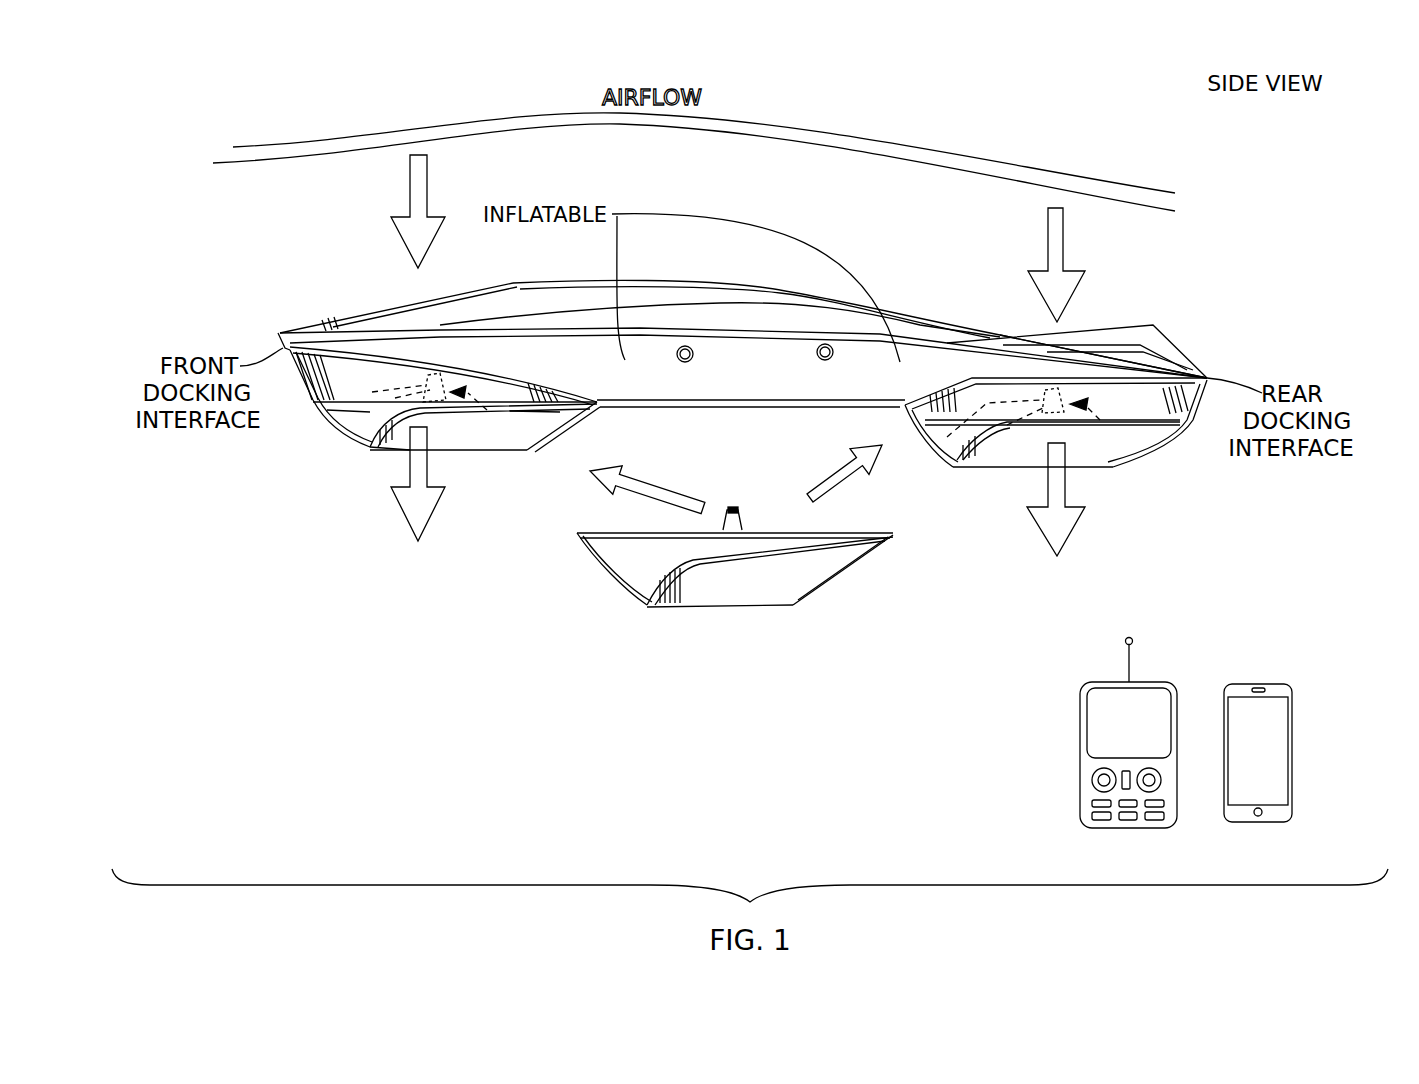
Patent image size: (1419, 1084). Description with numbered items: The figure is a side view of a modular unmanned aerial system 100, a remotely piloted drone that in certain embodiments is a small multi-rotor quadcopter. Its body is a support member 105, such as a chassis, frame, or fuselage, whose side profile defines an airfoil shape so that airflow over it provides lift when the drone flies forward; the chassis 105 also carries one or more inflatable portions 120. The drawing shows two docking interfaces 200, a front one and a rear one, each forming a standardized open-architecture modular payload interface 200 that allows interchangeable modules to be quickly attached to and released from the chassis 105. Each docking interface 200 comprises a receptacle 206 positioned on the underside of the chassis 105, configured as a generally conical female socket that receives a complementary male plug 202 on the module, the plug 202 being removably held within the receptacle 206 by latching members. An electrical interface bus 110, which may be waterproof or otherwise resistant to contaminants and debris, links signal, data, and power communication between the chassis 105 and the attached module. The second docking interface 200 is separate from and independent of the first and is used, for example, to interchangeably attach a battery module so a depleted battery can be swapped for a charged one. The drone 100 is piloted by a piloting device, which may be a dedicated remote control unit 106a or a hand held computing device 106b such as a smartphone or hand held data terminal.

The modular unmanned aerial system 100 is at (313, 103).
The support member 105 is at (382, 310).
The electrical interface bus 110 is at (436, 380).
The inflatable portion 120 is at (928, 360).
The modular payload interface 200 is at (487, 410).
The plug 202 is at (395, 398).
The receptacle 206 is at (372, 392).
The dedicated remote control unit 106a is at (1080, 748).
The hand held computing device 106b is at (1292, 746).